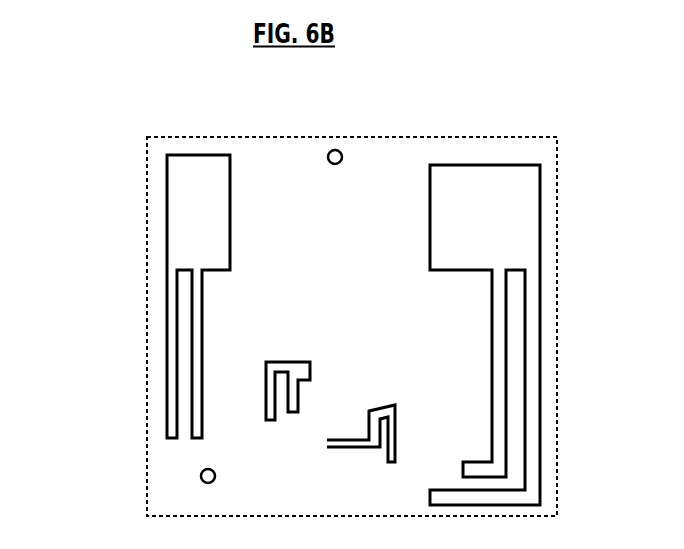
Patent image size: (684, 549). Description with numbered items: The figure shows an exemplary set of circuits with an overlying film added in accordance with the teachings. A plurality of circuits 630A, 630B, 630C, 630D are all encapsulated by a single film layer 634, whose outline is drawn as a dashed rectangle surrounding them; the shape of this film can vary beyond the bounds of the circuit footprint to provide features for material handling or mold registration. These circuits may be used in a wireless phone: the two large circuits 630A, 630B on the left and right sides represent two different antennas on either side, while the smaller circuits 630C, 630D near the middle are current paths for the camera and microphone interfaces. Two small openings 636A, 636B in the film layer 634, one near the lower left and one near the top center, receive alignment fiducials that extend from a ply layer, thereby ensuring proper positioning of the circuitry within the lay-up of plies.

The film layer 634 is at (146, 175).
The circuit 630A is at (192, 241).
The circuit 630B is at (515, 213).
The circuit 630C is at (295, 355).
The circuit 630D is at (378, 400).
The opening 636A is at (192, 476).
The opening 636B is at (350, 155).